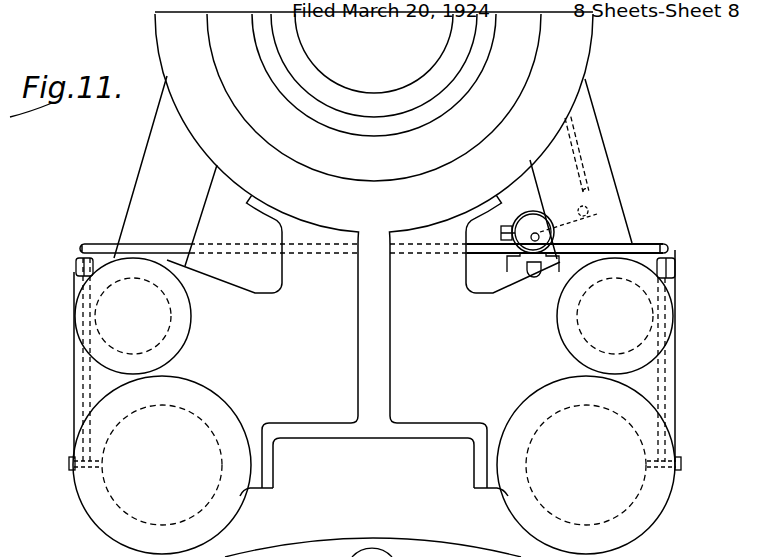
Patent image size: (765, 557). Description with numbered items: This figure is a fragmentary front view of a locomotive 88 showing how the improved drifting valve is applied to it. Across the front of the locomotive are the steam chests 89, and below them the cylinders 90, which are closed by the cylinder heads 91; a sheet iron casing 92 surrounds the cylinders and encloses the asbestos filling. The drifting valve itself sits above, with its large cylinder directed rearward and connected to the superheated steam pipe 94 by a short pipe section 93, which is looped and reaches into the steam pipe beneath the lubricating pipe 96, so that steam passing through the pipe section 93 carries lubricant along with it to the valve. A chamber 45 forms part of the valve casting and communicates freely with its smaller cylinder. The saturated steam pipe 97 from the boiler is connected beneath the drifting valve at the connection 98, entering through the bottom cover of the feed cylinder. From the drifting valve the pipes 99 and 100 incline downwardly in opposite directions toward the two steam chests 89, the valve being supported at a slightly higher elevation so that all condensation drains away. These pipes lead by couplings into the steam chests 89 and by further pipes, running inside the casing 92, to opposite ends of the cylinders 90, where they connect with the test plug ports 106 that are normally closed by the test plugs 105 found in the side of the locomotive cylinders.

The locomotive 88 is at (568, 44).
The superheated steam pipe 94 is at (603, 182).
The pipe 99 is at (262, 250).
The saturated steam pipe 97 is at (599, 244).
The pipe 100 is at (618, 244).
The sheet iron casing 92 is at (678, 373).
The steam chests 89 is at (662, 303).
The cylinder heads 91 is at (648, 522).
The cylinders 90 is at (640, 497).
The test plugs 105 is at (683, 462).
The test plug ports 106 is at (676, 475).
The chamber 45 is at (514, 217).
The connection of saturated steam pipe 98 is at (534, 276).
The lubricating pipe 96 is at (573, 140).
The short pipe section 93 is at (597, 214).